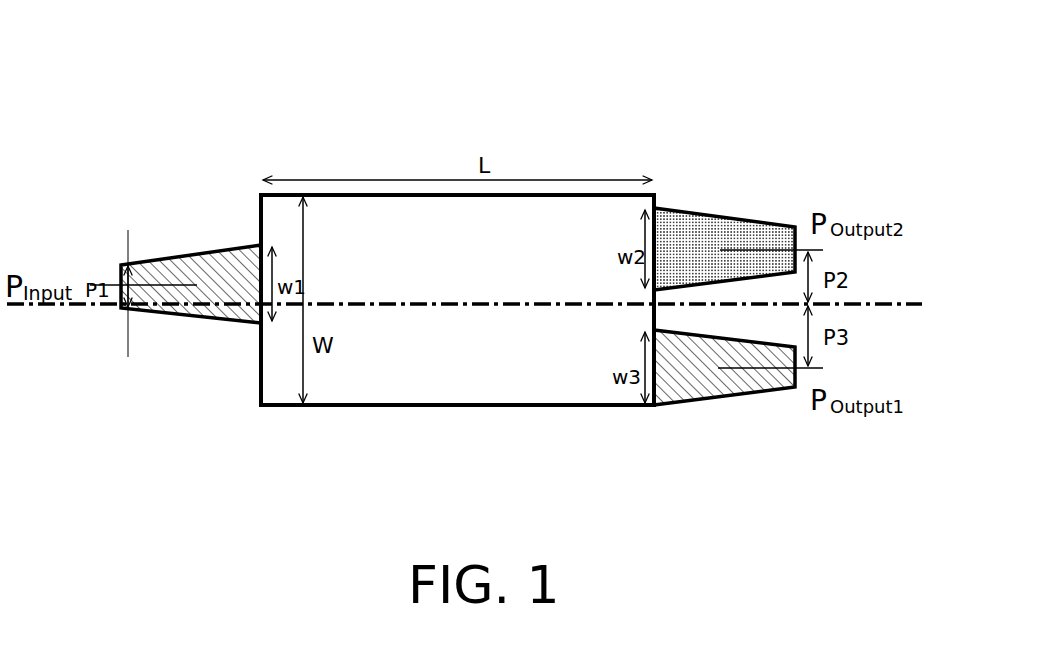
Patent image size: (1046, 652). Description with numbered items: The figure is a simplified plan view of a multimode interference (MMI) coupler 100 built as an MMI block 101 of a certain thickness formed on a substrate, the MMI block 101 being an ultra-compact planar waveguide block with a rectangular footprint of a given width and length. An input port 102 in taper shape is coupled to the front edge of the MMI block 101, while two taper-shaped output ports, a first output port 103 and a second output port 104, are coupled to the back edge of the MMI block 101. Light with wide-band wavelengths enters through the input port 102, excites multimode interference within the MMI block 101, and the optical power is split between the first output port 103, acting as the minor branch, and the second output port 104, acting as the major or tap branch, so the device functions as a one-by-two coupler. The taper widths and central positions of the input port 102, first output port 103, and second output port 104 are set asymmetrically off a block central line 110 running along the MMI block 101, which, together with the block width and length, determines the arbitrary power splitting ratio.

The multimode interference (MMI) coupler 100 is at (441, 84).
The MMI block 101 is at (381, 406).
The input port 102 is at (207, 315).
The first output port 103 is at (732, 380).
The second output port 104 is at (715, 216).
The block central line 110 is at (478, 307).